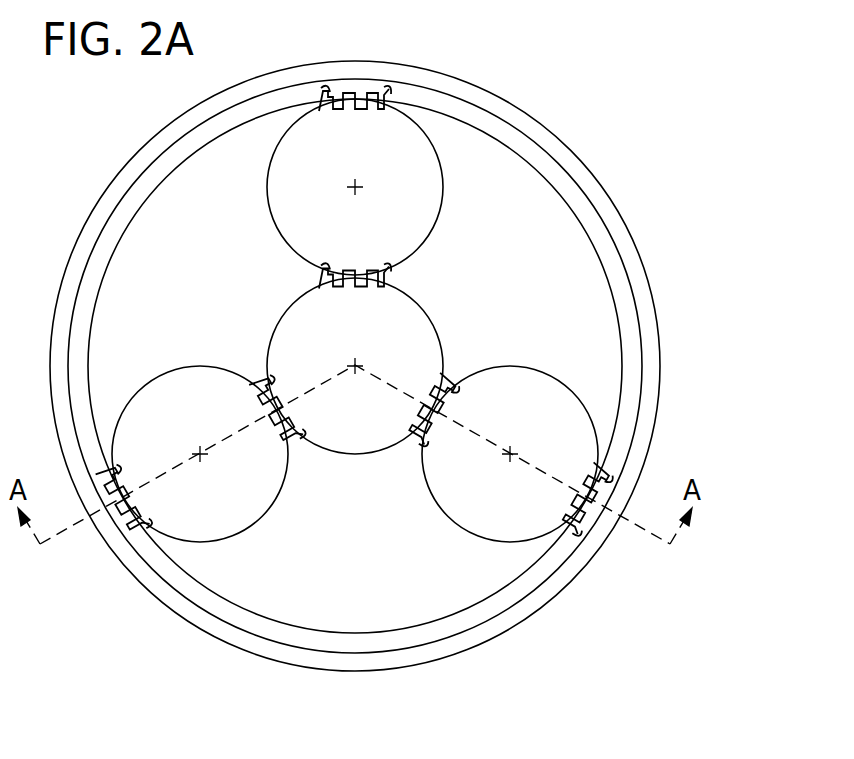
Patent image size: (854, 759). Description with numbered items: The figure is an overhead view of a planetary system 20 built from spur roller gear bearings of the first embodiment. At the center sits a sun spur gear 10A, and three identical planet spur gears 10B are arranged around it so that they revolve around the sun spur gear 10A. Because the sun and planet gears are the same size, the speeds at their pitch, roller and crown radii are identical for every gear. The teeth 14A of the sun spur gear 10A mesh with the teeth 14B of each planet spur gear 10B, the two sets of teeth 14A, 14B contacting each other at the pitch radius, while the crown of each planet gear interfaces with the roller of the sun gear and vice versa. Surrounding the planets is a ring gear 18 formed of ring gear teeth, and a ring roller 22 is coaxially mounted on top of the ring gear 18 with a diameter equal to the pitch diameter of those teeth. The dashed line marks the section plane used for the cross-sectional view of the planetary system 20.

The sun spur gear 10A is at (413, 306).
The planet spur gear 10B is at (443, 190).
The sun gear teeth 14A is at (436, 386).
The planet gear teeth 14B is at (428, 473).
The ring gear 18 is at (654, 295).
The planetary system 20 is at (583, 110).
The ring roller 22 is at (553, 562).